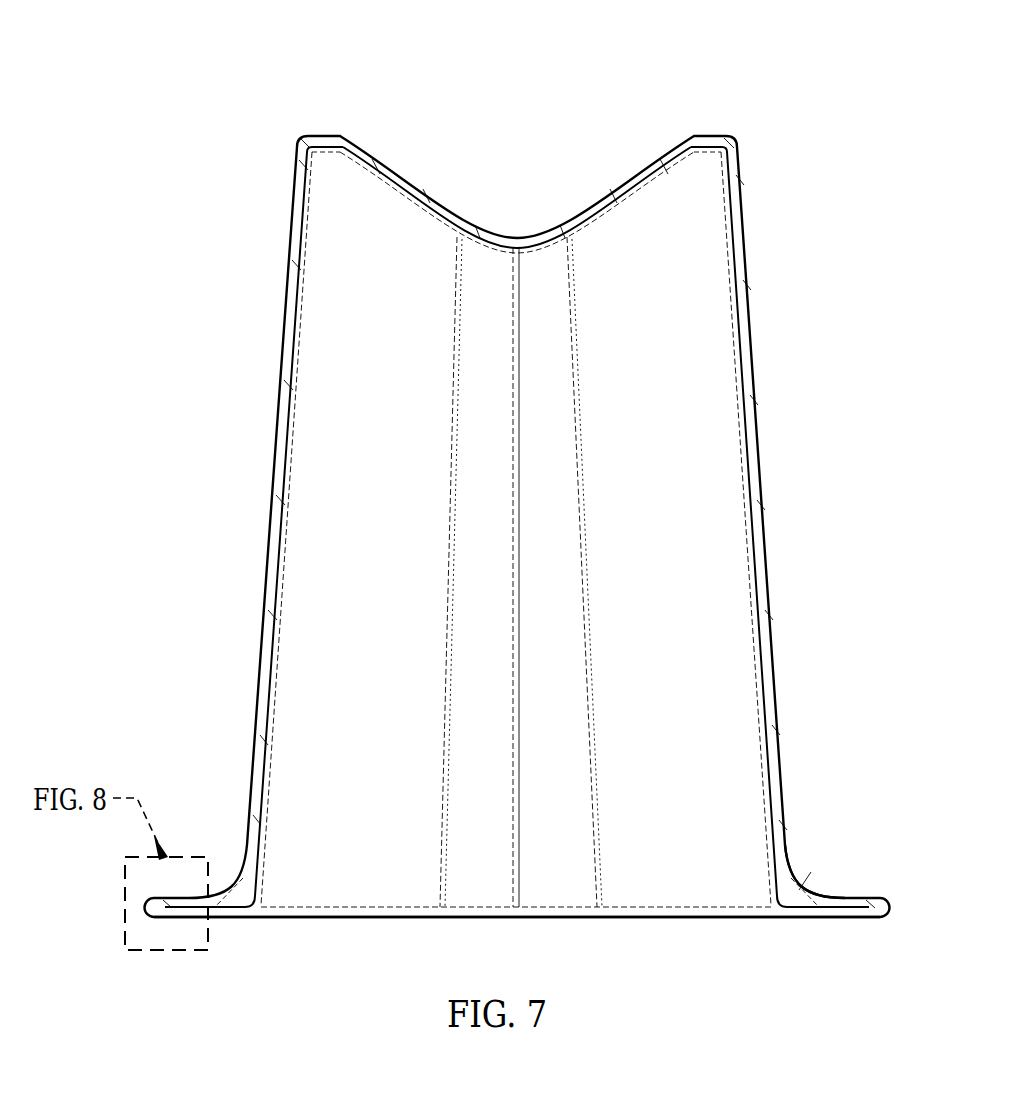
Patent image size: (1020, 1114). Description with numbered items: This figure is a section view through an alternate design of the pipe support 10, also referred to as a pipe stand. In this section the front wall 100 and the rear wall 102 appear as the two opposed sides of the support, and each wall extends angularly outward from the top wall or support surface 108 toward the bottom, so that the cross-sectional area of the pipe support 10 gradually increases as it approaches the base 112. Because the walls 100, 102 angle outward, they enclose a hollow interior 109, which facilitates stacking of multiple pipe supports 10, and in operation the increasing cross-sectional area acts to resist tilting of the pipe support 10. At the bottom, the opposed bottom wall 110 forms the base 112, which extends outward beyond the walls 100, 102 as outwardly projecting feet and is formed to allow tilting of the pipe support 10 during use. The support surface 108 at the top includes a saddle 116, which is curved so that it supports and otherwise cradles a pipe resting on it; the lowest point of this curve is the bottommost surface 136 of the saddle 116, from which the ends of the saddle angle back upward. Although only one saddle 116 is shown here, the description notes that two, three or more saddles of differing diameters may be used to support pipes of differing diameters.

The pipe support 10 is at (214, 68).
The front wall 100 is at (765, 522).
The rear wall 102 is at (270, 538).
The top wall or support surface 108 is at (707, 135).
The hollow interior 109 is at (742, 630).
The bottom wall 110 is at (232, 919).
The base 112 is at (853, 890).
The saddle 116 is at (463, 207).
The bottommost surface of the saddle 136 is at (513, 230).